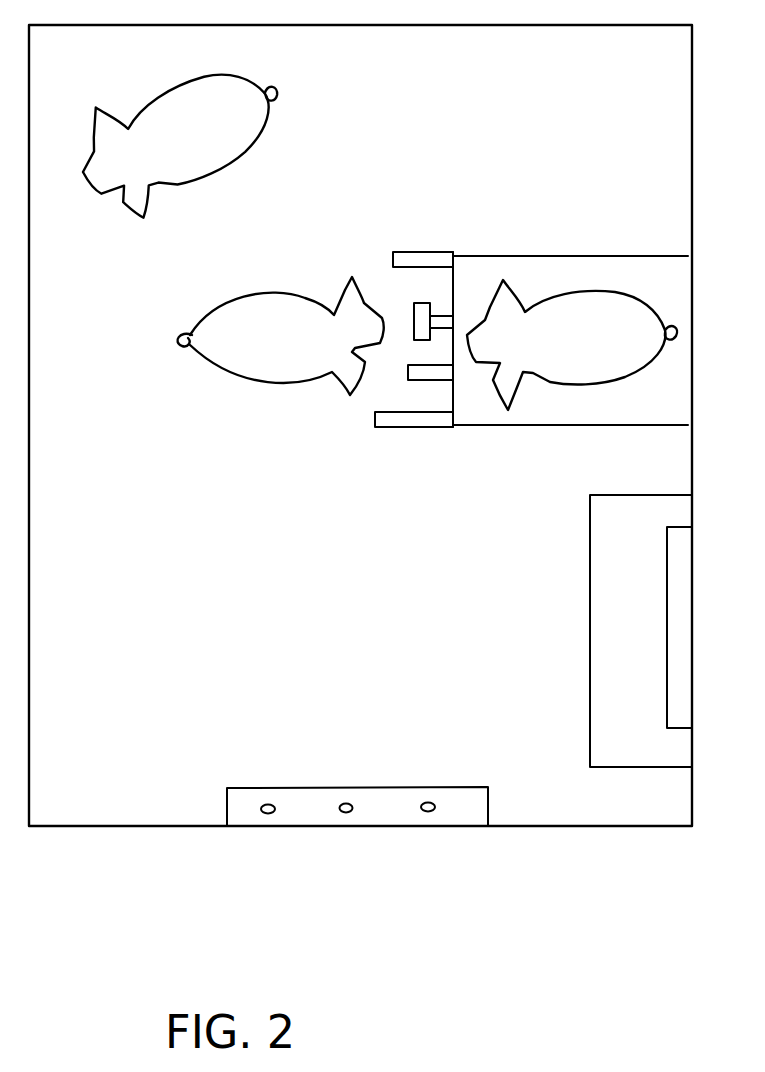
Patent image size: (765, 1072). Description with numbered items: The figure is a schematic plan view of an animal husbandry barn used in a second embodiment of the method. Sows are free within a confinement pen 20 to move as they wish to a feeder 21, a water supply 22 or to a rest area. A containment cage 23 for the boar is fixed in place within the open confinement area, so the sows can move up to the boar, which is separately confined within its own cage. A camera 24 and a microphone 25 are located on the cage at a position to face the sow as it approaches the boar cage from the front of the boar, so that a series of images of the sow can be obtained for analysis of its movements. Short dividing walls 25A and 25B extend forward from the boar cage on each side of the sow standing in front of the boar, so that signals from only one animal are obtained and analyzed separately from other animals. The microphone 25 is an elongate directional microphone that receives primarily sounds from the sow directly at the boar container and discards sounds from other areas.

The confinement pen 20 is at (30, 668).
The feeder 21 is at (622, 620).
The water supply 22 is at (362, 778).
The containment cage 23 is at (580, 256).
The camera 24 is at (420, 303).
The microphone 25 is at (433, 381).
The short dividing wall 25A is at (438, 258).
The short dividing wall 25B is at (379, 427).